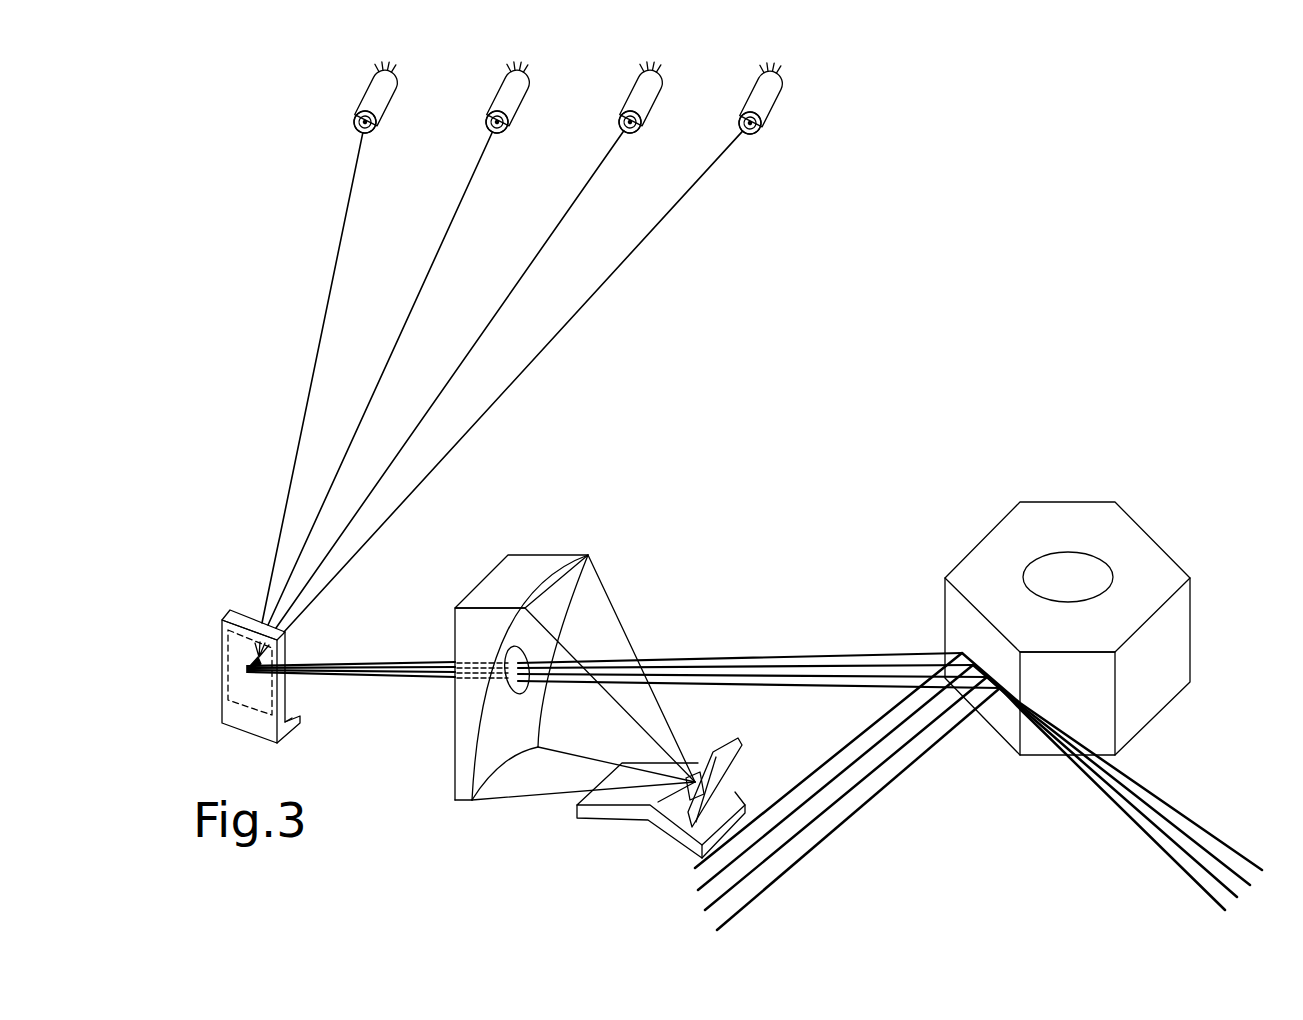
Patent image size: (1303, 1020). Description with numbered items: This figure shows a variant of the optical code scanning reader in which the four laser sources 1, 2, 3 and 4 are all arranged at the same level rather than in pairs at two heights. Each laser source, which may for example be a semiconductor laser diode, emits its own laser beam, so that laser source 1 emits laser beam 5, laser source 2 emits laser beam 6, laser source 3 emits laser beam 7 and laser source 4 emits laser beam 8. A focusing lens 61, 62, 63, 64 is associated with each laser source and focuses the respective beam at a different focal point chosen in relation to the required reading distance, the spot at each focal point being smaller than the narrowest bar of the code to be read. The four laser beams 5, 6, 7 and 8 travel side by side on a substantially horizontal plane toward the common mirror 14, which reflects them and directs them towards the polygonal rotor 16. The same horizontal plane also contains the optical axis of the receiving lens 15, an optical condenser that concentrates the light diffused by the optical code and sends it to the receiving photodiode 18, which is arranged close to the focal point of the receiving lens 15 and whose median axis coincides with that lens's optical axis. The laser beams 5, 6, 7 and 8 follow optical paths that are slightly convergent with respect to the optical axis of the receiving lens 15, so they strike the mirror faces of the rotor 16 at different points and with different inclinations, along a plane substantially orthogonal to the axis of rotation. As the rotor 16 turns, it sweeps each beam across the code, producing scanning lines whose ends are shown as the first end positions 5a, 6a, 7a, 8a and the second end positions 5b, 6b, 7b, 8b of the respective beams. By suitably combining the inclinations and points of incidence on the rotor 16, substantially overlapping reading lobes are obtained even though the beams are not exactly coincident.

The laser source 1 is at (766, 77).
The laser source 2 is at (646, 76).
The laser source 3 is at (513, 76).
The laser source 4 is at (383, 76).
The laser beam 5 is at (690, 189).
The laser beam 6 is at (587, 184).
The laser beam 7 is at (469, 184).
The laser beam 8 is at (347, 204).
The focusing lens 61 is at (739, 120).
The focusing lens 62 is at (619, 119).
The focusing lens 63 is at (486, 119).
The focusing lens 64 is at (354, 119).
The common mirror 14 is at (235, 680).
The receiving lens 15 is at (462, 802).
The polygonal rotor 16 is at (1049, 632).
The receiving photodiode 18 is at (706, 752).
The laser beam in first end position 5a is at (840, 752).
The laser beam in first end position 6a is at (815, 793).
The laser beam in first end position 7a is at (808, 826).
The laser beam in first end position 8a is at (795, 864).
The laser beam in second end position 5b is at (1093, 783).
The laser beam in second end position 6b is at (1122, 797).
The laser beam in second end position 7b is at (1140, 818).
The laser beam in second end position 8b is at (1153, 840).